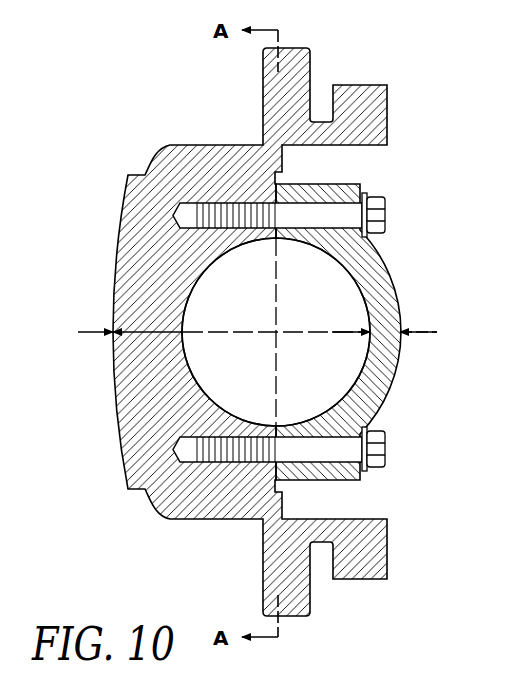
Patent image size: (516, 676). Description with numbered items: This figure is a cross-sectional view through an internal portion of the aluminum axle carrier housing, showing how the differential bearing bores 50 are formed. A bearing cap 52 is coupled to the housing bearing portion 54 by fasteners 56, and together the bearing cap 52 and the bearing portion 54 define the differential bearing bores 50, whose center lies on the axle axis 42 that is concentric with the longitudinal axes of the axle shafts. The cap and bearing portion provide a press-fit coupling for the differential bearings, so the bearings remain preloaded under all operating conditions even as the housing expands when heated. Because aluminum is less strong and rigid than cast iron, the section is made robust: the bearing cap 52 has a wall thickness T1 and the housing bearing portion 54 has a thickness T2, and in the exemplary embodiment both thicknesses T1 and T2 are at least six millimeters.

The axle axis 42 is at (273, 331).
The differential bearing bores 50 is at (328, 294).
The bearing cap 52 is at (397, 370).
The housing bearing portion 54 is at (113, 362).
The fasteners 56 is at (386, 223).
The wall thickness of bearing cap T1 is at (384, 328).
The thickness of housing bearing portion T2 is at (147, 330).